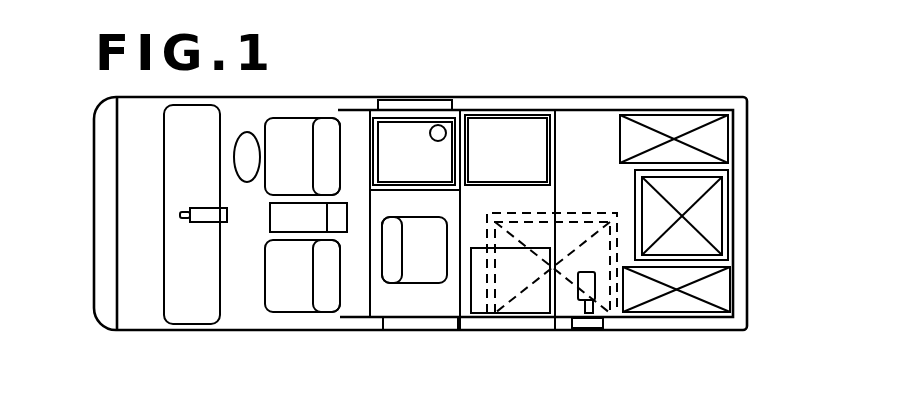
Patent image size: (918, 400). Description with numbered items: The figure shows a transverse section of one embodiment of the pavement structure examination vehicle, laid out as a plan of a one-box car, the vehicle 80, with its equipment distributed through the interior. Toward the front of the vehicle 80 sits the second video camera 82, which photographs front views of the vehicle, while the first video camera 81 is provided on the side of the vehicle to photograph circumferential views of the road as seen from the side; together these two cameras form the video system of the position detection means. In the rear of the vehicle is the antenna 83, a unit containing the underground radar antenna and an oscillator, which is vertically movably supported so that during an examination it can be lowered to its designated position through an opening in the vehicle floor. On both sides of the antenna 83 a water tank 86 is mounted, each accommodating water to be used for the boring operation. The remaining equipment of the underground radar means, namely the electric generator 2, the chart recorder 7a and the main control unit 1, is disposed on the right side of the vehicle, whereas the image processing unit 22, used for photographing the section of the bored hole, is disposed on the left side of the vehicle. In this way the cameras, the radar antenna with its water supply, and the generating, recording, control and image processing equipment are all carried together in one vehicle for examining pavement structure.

The main control unit 1 is at (510, 127).
The electric generator 2 is at (567, 303).
The chart recorder 7a is at (422, 130).
The image processing unit 22 is at (508, 282).
The vehicle 80 is at (355, 97).
The first video camera 81 is at (592, 297).
The second video camera 82 is at (207, 222).
The antenna 83 is at (712, 222).
The water tank 86 is at (715, 137).